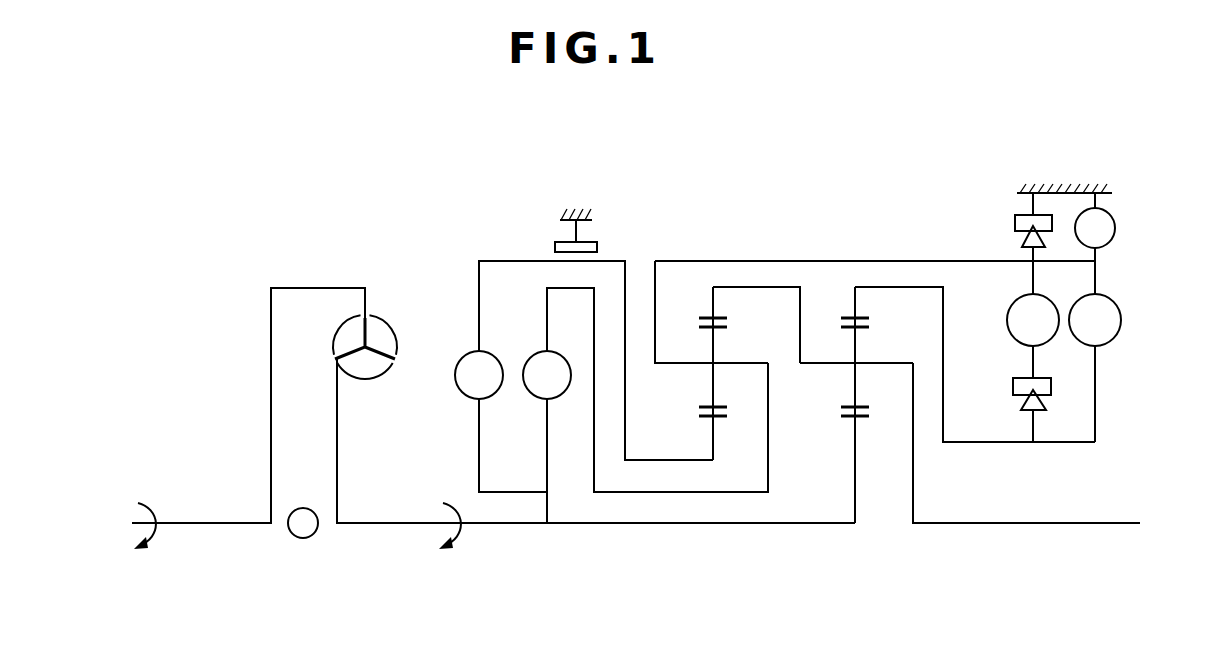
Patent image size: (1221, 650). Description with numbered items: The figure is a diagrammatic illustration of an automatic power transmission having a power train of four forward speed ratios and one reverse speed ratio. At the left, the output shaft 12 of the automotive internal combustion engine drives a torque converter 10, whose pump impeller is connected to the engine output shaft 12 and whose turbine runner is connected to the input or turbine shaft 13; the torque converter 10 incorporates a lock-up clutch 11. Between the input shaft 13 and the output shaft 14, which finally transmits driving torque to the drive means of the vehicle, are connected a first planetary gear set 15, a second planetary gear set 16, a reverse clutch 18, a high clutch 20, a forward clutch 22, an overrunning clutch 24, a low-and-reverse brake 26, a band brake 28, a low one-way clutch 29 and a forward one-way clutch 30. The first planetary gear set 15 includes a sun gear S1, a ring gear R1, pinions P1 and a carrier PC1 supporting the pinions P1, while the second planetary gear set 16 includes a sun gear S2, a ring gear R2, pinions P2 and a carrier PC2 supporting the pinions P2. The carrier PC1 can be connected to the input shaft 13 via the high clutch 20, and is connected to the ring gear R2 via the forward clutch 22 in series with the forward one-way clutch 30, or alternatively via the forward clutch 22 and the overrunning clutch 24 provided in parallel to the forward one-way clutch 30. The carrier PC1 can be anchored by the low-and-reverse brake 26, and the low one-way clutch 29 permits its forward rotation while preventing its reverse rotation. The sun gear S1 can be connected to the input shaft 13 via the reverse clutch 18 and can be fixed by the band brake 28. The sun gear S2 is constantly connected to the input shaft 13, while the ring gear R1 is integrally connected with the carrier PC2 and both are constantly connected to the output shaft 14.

The torque converter 10 is at (392, 313).
The lock-up clutch 11 is at (303, 538).
The engine output shaft 12 is at (226, 520).
The input shaft 13 is at (400, 523).
The output shaft 14 is at (970, 521).
The first planetary gear set 15 is at (718, 337).
The second planetary gear set 16 is at (941, 377).
The reverse clutch 18 is at (459, 393).
The high clutch 20 is at (534, 399).
The forward clutch 22 is at (1011, 335).
The overrunning clutch 24 is at (1122, 313).
The low-and-reverse brake 26 is at (1115, 222).
The band brake 28 is at (580, 232).
The low one-way clutch 29 is at (1013, 222).
The forward one-way clutch 30 is at (1012, 390).
The ring gear R1 is at (713, 297).
The carrier PC1 is at (742, 360).
The pinions P1 is at (710, 395).
The sun gear S1 is at (716, 448).
The ring gear R2 is at (856, 297).
The carrier PC2 is at (888, 360).
The pinions P2 is at (853, 391).
The sun gear S2 is at (857, 500).